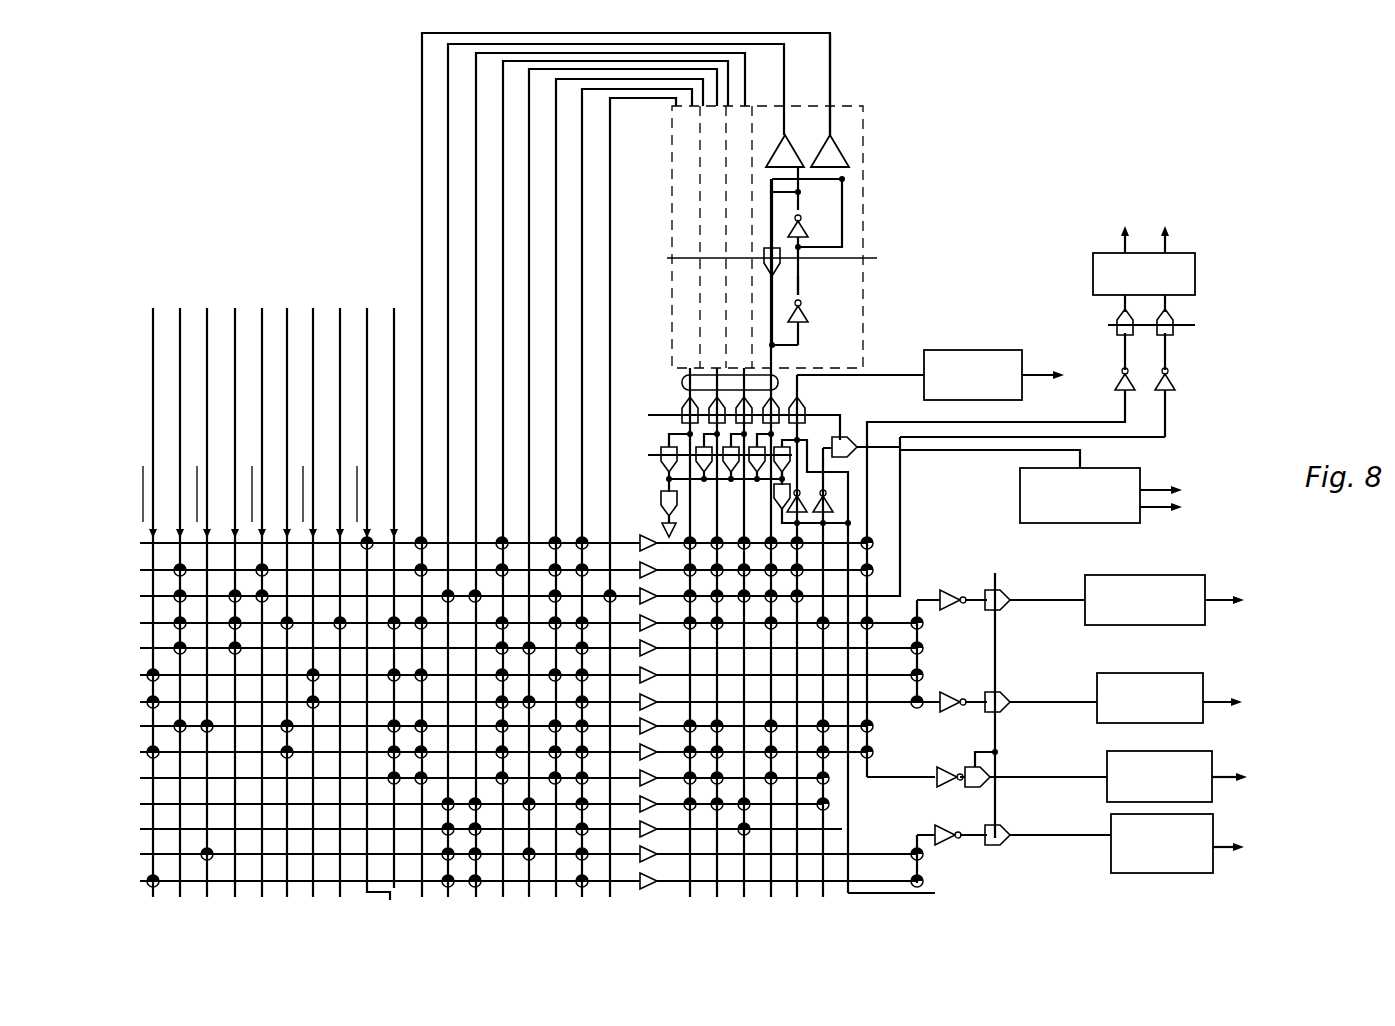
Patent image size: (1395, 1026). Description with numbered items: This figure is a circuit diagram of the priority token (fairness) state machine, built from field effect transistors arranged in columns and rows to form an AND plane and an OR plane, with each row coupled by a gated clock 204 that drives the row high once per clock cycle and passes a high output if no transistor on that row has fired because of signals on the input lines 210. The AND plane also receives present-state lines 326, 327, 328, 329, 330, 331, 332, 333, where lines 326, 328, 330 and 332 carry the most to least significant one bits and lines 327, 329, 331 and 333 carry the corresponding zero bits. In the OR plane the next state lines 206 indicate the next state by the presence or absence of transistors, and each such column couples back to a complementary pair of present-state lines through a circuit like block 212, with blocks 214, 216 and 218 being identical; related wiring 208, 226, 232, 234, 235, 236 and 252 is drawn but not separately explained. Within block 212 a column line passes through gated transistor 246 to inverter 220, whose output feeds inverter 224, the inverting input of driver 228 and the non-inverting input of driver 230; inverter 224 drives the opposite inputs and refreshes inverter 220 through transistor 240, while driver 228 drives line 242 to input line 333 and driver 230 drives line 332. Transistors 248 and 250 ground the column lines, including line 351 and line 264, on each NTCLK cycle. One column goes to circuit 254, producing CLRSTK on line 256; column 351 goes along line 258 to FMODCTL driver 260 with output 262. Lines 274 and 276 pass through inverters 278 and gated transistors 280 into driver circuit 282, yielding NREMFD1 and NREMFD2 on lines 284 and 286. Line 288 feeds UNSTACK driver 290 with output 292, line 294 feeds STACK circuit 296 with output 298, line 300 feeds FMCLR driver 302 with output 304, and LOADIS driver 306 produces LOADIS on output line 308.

The gated clock 204 is at (657, 881).
The next state lines 206 is at (682, 382).
The decoder output lines 208 is at (672, 352).
The input lines 210 is at (145, 300).
The block 212 is at (866, 106).
The block 214 is at (700, 135).
The block 216 is at (726, 170).
The block 218 is at (676, 205).
The inverter 220 is at (818, 322).
The inverter 224 is at (790, 180).
The line 226 is at (845, 179).
The driver 228 is at (846, 150).
The second driver 230 is at (790, 132).
The line 232 is at (772, 196).
The inverter 234 is at (815, 218).
The gate 235 is at (790, 262).
The line 236 is at (845, 236).
The transistor 240 is at (808, 295).
The line 242 is at (834, 38).
The field effect transistor 246 is at (852, 440).
The transistors 248 is at (662, 448).
The transistors 250 is at (660, 498).
The line 252 is at (800, 376).
The circuit 254 is at (962, 348).
The line 256 is at (1040, 374).
The line 258 is at (978, 450).
The FMODCTL driver 260 is at (1145, 487).
The output line 262 is at (1145, 507).
The line 264 is at (935, 893).
The line 274 is at (1130, 412).
The line 276 is at (1167, 437).
The inverters 278 is at (1172, 378).
The gated transistors 280 is at (1197, 325).
The driver circuit 282 is at (1198, 268).
The line 284 is at (1125, 236).
The line 286 is at (1168, 236).
The line 288 is at (1008, 590).
The UNSTACK driver circuit 290 is at (1200, 575).
The output line 292 is at (1242, 600).
The line 294 is at (1010, 702).
The STACK circuit 296 is at (1182, 673).
The output line 298 is at (1240, 702).
The line 300 is at (1010, 775).
The FMCLR driver 302 is at (1200, 751).
The output line 304 is at (1245, 777).
The LOADIS driver 306 is at (1208, 814).
The output line 308 is at (1240, 855).
The line 326 is at (606, 280).
The line 327 is at (582, 212).
The line 328 is at (556, 172).
The line 329 is at (529, 143).
The line 330 is at (503, 73).
The line 331 is at (476, 93).
The line 332 is at (448, 120).
The line 333 is at (422, 283).
The output column line 351 is at (826, 536).